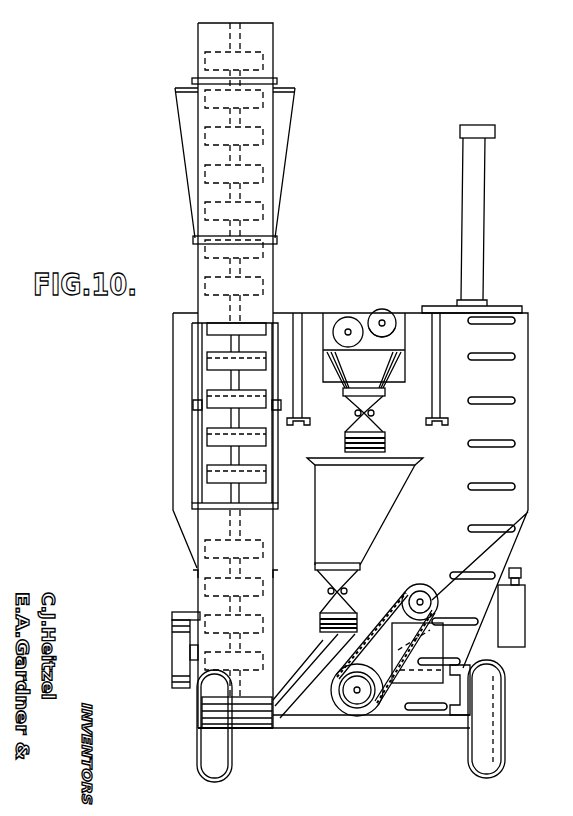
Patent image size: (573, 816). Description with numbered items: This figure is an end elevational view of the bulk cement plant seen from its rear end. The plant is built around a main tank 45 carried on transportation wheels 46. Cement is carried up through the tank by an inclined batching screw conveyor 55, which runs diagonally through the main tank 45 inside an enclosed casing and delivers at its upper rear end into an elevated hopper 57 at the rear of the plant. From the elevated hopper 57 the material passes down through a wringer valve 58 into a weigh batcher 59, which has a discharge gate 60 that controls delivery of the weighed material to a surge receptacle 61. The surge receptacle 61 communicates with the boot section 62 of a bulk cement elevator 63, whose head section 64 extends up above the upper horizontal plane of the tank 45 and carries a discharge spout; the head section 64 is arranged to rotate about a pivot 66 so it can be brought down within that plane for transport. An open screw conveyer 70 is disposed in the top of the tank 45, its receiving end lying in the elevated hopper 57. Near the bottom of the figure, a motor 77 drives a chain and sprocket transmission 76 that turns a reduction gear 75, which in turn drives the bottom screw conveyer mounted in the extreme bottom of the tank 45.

The main tank 45 is at (515, 370).
The transportation wheels 46 is at (476, 740).
The inclined batching screw conveyor 55 is at (402, 303).
The elevated hopper 57 is at (372, 375).
The wringer valve 58 is at (374, 413).
The weigh batcher 59 is at (358, 511).
The discharge gate 60 is at (328, 590).
The surge receptacle 61 is at (300, 650).
The boot section 62 is at (238, 728).
The bulk cement elevator 63 is at (207, 442).
The head section 64 is at (282, 170).
The pivot 66 is at (193, 405).
The open screw conveyer 70 is at (348, 320).
The reduction gear 75 is at (337, 715).
The chain and sprocket transmission 76 is at (380, 628).
The motor 77 is at (427, 576).